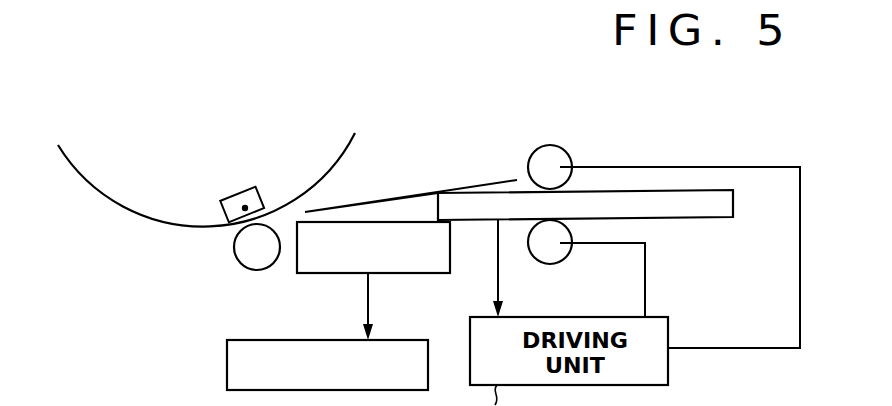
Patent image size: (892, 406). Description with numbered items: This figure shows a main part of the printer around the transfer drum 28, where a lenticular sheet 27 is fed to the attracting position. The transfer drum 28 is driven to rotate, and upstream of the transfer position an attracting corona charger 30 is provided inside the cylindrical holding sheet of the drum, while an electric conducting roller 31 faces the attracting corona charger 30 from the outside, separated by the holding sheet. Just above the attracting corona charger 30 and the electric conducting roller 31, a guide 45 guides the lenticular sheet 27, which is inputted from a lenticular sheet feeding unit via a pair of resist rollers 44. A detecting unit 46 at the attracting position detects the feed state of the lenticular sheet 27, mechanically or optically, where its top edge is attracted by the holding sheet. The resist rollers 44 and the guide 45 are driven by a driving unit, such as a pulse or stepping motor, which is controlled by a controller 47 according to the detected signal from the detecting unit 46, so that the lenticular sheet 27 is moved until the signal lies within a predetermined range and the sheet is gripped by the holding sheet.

The lenticular sheet 27 is at (702, 218).
The transfer drum 28 is at (93, 187).
The attracting corona charger 30 is at (237, 192).
The electric conducting roller 31 is at (233, 258).
The resist rollers 44 is at (570, 153).
The guide 45 is at (457, 223).
The detecting unit 46 is at (370, 226).
The controller 47 is at (227, 358).